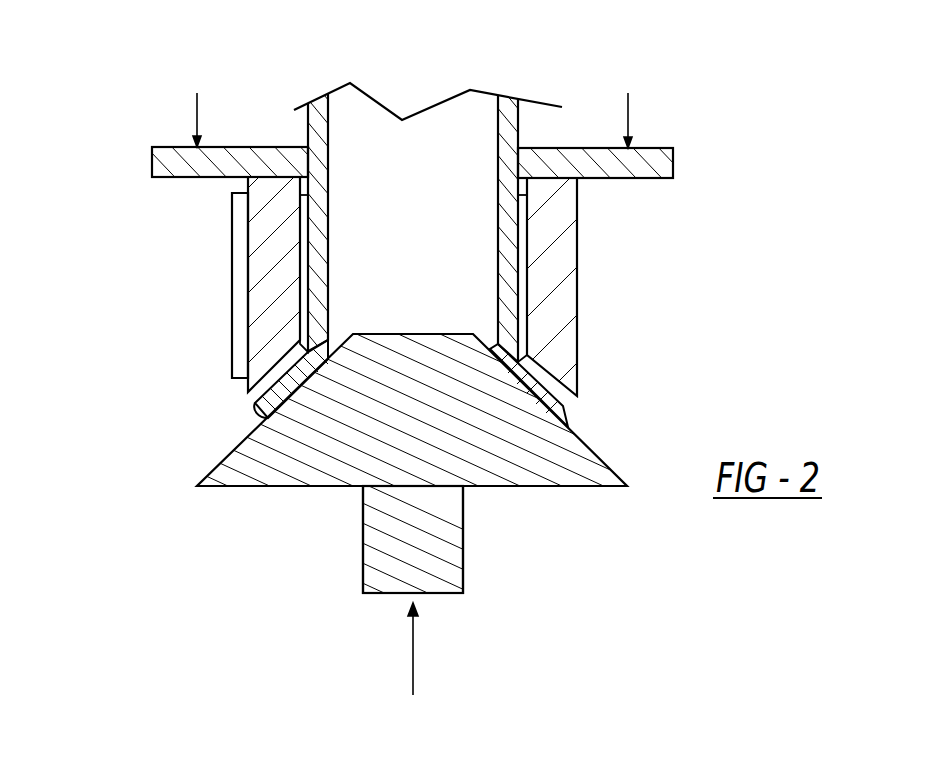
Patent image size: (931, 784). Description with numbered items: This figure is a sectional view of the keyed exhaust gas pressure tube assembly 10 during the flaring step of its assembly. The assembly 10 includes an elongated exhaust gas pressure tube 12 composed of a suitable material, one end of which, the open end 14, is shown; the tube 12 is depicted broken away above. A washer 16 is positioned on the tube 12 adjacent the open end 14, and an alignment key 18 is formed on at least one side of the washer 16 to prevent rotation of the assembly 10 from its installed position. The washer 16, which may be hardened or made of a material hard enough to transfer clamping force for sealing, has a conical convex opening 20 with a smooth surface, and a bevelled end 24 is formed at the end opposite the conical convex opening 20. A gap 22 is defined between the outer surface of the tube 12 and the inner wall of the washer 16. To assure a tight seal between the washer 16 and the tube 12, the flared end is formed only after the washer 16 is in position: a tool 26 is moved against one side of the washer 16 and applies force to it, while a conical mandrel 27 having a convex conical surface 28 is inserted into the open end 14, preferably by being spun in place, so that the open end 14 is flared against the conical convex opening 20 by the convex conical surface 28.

The exhaust gas pressure tube assembly 10 is at (108, 103).
The elongated exhaust gas pressure tube 12 is at (517, 125).
The open end 14 is at (570, 402).
The washer 16 is at (548, 291).
The alignment key 18 is at (232, 290).
The conical convex opening 20 is at (253, 405).
The gap 22 is at (300, 270).
The bevelled end 24 is at (527, 184).
The tool 26 is at (658, 161).
The conical mandrel 27 is at (515, 473).
The convex conical surface 28 is at (240, 441).